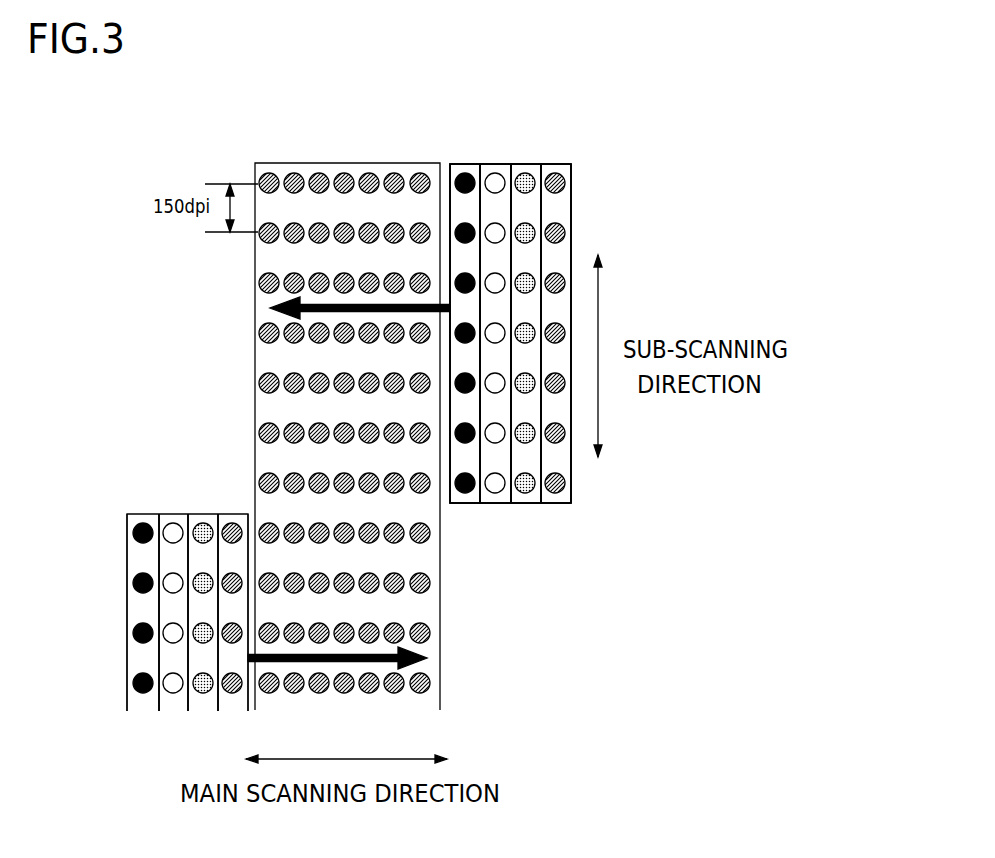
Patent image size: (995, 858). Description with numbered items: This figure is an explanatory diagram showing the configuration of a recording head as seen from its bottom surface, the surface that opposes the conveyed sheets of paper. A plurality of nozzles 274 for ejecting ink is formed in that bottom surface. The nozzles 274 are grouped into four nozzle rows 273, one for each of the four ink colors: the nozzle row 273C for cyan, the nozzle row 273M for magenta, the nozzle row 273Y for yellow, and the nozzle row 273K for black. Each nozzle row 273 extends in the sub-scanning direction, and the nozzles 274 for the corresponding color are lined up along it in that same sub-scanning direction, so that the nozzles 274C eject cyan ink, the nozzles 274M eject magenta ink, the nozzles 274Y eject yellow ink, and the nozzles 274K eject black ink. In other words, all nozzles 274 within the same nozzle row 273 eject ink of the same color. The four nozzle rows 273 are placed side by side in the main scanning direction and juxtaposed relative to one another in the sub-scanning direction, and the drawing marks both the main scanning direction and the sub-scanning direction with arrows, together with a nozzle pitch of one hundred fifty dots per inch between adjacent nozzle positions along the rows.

The nozzle row 273 is at (367, 437).
The nozzle row for K color 273K is at (140, 512).
The nozzle row for Y color 273Y is at (170, 512).
The nozzle row for C color 273C is at (203, 512).
The nozzle row for M color 273M is at (237, 512).
The nozzle 274 is at (490, 288).
The nozzle for K color 274K is at (466, 172).
The nozzle for Y color 274Y is at (497, 167).
The nozzle for C color 274C is at (528, 172).
The nozzle for M color 274M is at (560, 167).